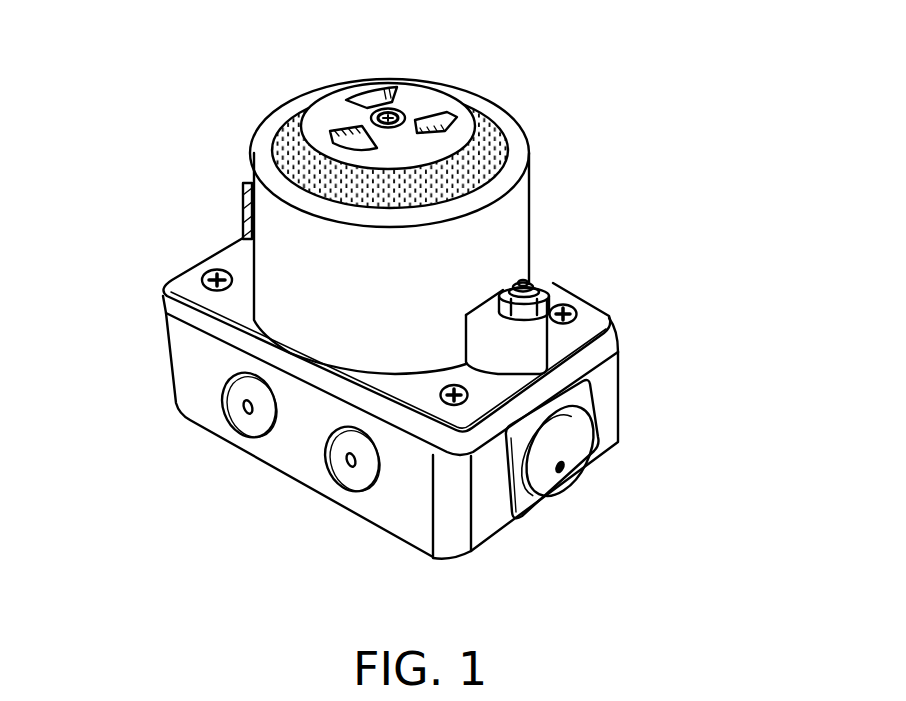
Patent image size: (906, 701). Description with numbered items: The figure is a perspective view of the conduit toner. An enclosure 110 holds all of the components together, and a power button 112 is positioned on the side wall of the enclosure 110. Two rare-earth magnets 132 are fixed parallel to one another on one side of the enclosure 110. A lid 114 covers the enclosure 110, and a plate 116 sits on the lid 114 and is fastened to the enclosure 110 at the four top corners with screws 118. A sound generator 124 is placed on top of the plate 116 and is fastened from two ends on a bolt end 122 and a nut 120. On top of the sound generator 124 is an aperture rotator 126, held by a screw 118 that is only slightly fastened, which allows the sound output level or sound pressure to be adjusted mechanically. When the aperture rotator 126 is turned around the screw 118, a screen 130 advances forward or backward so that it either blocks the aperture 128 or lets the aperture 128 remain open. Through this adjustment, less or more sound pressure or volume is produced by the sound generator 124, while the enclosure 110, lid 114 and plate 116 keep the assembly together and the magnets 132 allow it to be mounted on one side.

The enclosure 110 is at (412, 511).
The power button 112 is at (573, 442).
The lid 114 is at (607, 338).
The plate 116 is at (595, 313).
The screws 118 is at (398, 110).
The nut 120 is at (546, 290).
The bolt end 122 is at (530, 284).
The sound generator 124 is at (323, 303).
The aperture rotator 126 is at (477, 147).
The aperture 128 is at (442, 115).
The screen 130 is at (343, 127).
The rare-earth magnets 132 is at (258, 424).